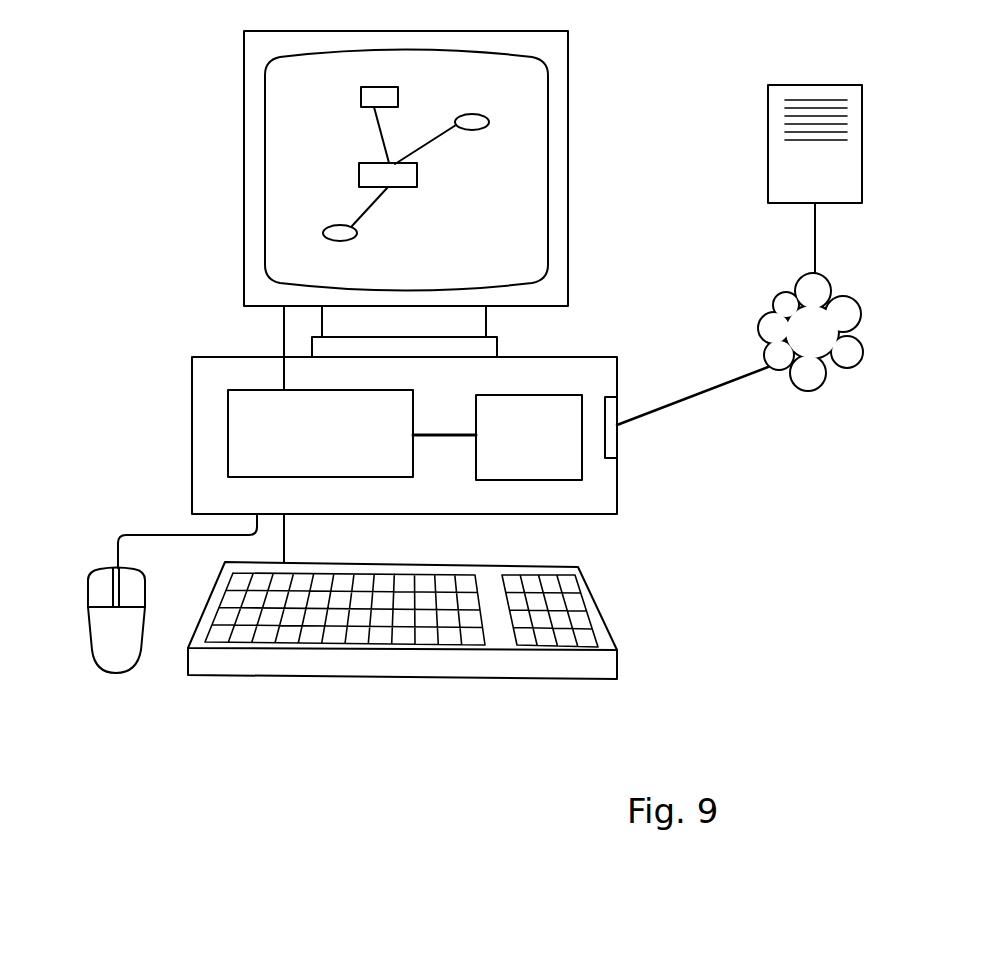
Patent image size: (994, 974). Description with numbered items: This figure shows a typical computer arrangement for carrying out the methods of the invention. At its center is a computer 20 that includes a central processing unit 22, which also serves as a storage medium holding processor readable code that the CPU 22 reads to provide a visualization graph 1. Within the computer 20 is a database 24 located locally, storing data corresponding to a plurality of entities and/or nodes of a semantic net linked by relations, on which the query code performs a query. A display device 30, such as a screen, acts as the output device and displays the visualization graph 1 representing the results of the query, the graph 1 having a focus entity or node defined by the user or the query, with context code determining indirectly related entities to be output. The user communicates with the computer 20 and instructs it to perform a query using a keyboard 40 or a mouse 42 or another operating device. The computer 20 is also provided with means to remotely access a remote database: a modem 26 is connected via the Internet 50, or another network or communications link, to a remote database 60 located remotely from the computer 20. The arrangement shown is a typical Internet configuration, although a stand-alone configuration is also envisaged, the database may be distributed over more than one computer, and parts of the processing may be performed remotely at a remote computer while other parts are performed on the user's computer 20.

The visualization graph 1 is at (265, 142).
The computer 20 is at (192, 375).
The central processing unit 22 is at (228, 448).
The database 24 is at (582, 475).
The modem 26 is at (620, 443).
The display device 30 is at (244, 70).
The keyboard 40 is at (618, 612).
The mouse 42 is at (88, 592).
The Internet 50 is at (861, 313).
The remote database 60 is at (862, 177).